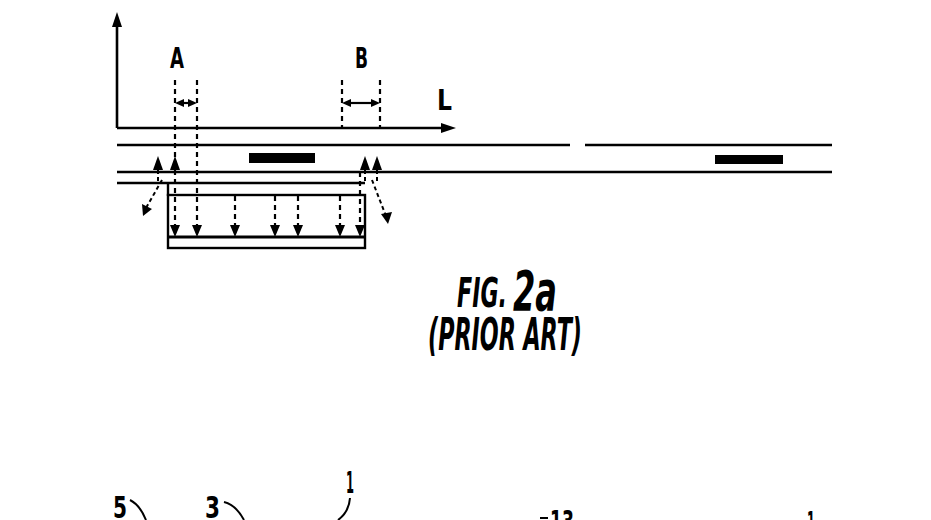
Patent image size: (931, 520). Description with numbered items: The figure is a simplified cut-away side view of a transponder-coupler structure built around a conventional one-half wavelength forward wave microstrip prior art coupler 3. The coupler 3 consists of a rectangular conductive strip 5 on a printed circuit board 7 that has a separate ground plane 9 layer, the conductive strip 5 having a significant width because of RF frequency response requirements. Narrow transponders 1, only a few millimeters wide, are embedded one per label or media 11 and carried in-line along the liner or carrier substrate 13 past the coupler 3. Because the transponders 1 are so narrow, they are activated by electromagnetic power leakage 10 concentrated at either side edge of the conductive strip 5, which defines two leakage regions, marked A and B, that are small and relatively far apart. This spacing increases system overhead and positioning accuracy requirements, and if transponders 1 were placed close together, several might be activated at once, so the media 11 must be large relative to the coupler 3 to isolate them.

The transponder 1 is at (258, 152).
The prior art coupler 3 is at (398, 231).
The conductive strip 5 is at (190, 192).
The printed circuit board 7 is at (367, 222).
The ground plane 9 is at (273, 250).
The electromagnetic power leakage 10 is at (160, 184).
The media 11 is at (503, 145).
The carrier substrate 13 is at (510, 173).